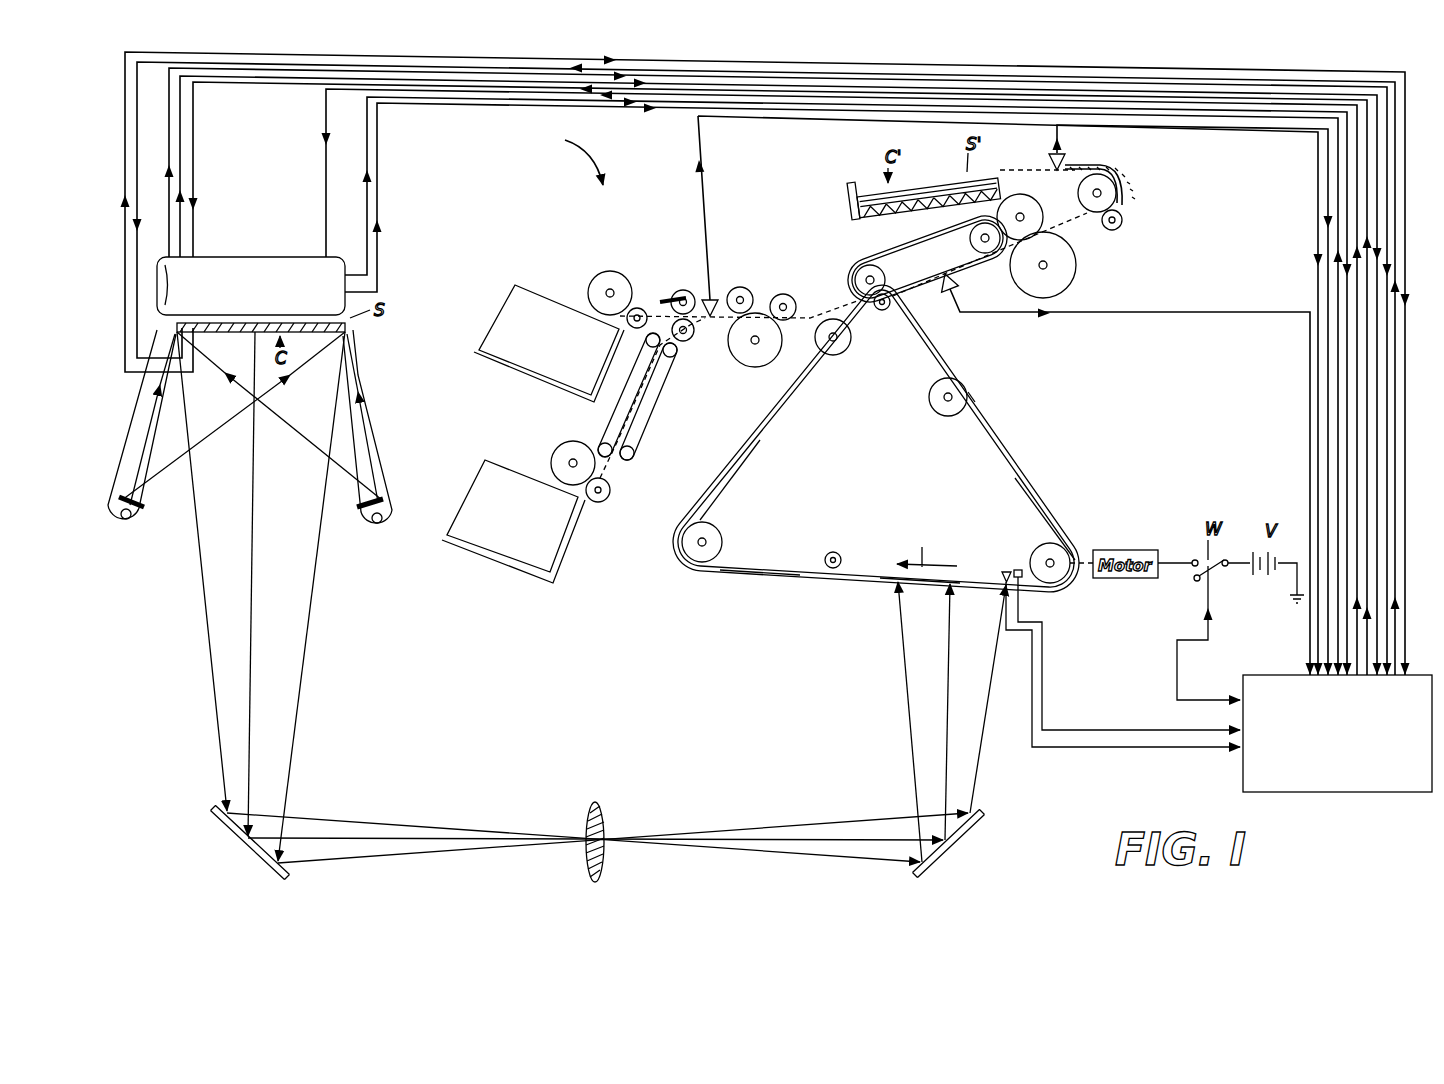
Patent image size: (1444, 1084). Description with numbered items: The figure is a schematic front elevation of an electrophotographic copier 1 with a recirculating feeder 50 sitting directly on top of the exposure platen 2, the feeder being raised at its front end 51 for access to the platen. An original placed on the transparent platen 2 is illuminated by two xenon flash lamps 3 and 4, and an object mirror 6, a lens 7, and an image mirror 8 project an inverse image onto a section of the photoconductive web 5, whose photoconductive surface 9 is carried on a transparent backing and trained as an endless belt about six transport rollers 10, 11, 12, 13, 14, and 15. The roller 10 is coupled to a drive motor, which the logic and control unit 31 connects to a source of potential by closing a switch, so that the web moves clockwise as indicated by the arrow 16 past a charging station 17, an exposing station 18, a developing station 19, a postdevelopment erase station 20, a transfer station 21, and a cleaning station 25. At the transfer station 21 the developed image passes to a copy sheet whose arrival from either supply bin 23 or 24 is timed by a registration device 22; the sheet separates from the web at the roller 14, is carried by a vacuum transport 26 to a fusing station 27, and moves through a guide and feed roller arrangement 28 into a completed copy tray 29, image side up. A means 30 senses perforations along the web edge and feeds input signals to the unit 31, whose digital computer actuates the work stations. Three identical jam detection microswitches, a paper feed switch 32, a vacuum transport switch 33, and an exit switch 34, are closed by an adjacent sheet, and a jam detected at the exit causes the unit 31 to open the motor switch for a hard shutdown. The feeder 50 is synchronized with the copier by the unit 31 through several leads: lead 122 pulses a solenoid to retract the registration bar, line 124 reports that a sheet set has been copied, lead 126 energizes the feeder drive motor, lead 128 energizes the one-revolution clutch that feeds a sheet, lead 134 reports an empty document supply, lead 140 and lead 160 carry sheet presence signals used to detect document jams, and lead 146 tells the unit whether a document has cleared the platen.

The electrophotographic copier 1 is at (575, 153).
The exposure platen 2 is at (175, 326).
The xenon flash lamp 3 is at (132, 527).
The xenon flash lamp 4 is at (365, 530).
The photoconductive web 5 is at (1013, 444).
The object mirror 6 is at (222, 816).
The lens 7 is at (600, 820).
The image mirror 8 is at (962, 836).
The photoconductive surface 9 is at (1032, 478).
The transport roller 10 is at (1040, 548).
The transport roller 11 is at (836, 552).
The transport roller 12 is at (718, 535).
The transport roller 13 is at (833, 352).
The transport roller 14 is at (882, 312).
The transport roller 15 is at (930, 398).
The arrow 16 is at (927, 547).
The charging station 17 is at (1077, 545).
The exposing station 18 is at (925, 588).
The developing station 19 is at (758, 570).
The postdevelopment erase station 20 is at (724, 478).
The transfer station 21 is at (840, 301).
The registration device 22 is at (758, 318).
The supply bin 23 is at (520, 325).
The supply bin 24 is at (482, 483).
The cleaning station 25 is at (992, 397).
The vacuum transport 26 is at (893, 256).
The fusing station 27 is at (1060, 235).
The guide and feed roller arrangement 28 is at (1124, 207).
The completed copy tray 29 is at (851, 194).
The means for sensing web perforations 30 is at (1008, 571).
The logic and control unit 31 is at (1285, 672).
The paper feed switch 32 is at (705, 300).
The vacuum transport switch 33 is at (952, 281).
The exit switch 34 is at (1068, 160).
The recirculating feeder 50 is at (310, 258).
The front end 51 is at (165, 285).
The lead 122 is at (137, 107).
The lead 146 is at (125, 138).
The line 124 is at (169, 147).
The lead 160 is at (180, 165).
The lead 126 is at (193, 182).
The lead 128 is at (326, 128).
The lead 134 is at (367, 150).
The lead 140 is at (377, 182).